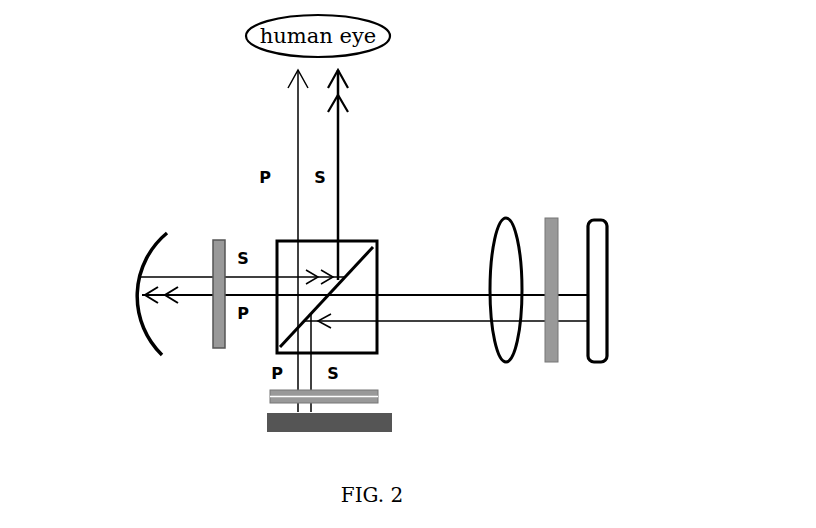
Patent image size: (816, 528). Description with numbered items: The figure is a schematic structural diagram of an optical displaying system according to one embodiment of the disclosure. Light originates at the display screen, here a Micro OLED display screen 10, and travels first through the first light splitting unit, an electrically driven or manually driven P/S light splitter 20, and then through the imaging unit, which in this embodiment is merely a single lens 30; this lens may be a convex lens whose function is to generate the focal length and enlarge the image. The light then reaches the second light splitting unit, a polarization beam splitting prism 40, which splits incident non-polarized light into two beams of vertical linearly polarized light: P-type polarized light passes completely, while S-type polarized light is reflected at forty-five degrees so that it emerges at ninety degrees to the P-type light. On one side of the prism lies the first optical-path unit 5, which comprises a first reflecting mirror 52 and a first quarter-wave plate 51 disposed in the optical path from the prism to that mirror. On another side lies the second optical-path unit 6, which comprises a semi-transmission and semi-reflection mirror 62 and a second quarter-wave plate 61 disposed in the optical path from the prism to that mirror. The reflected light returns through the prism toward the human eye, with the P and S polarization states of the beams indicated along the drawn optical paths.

The Micro OLED display screen 10 is at (595, 238).
The P/S light splitter 20 is at (548, 237).
The single lens 30 is at (505, 238).
The polarization beam splitting prism 40 is at (350, 253).
The first optical-path unit 5 is at (166, 340).
The first quarter-wave plate 51 is at (216, 343).
The first reflecting mirror 52 is at (152, 343).
The second optical-path unit 6 is at (382, 433).
The second quarter-wave plate 61 is at (368, 393).
The semi-transmission and semi-reflection mirror 62 is at (373, 430).